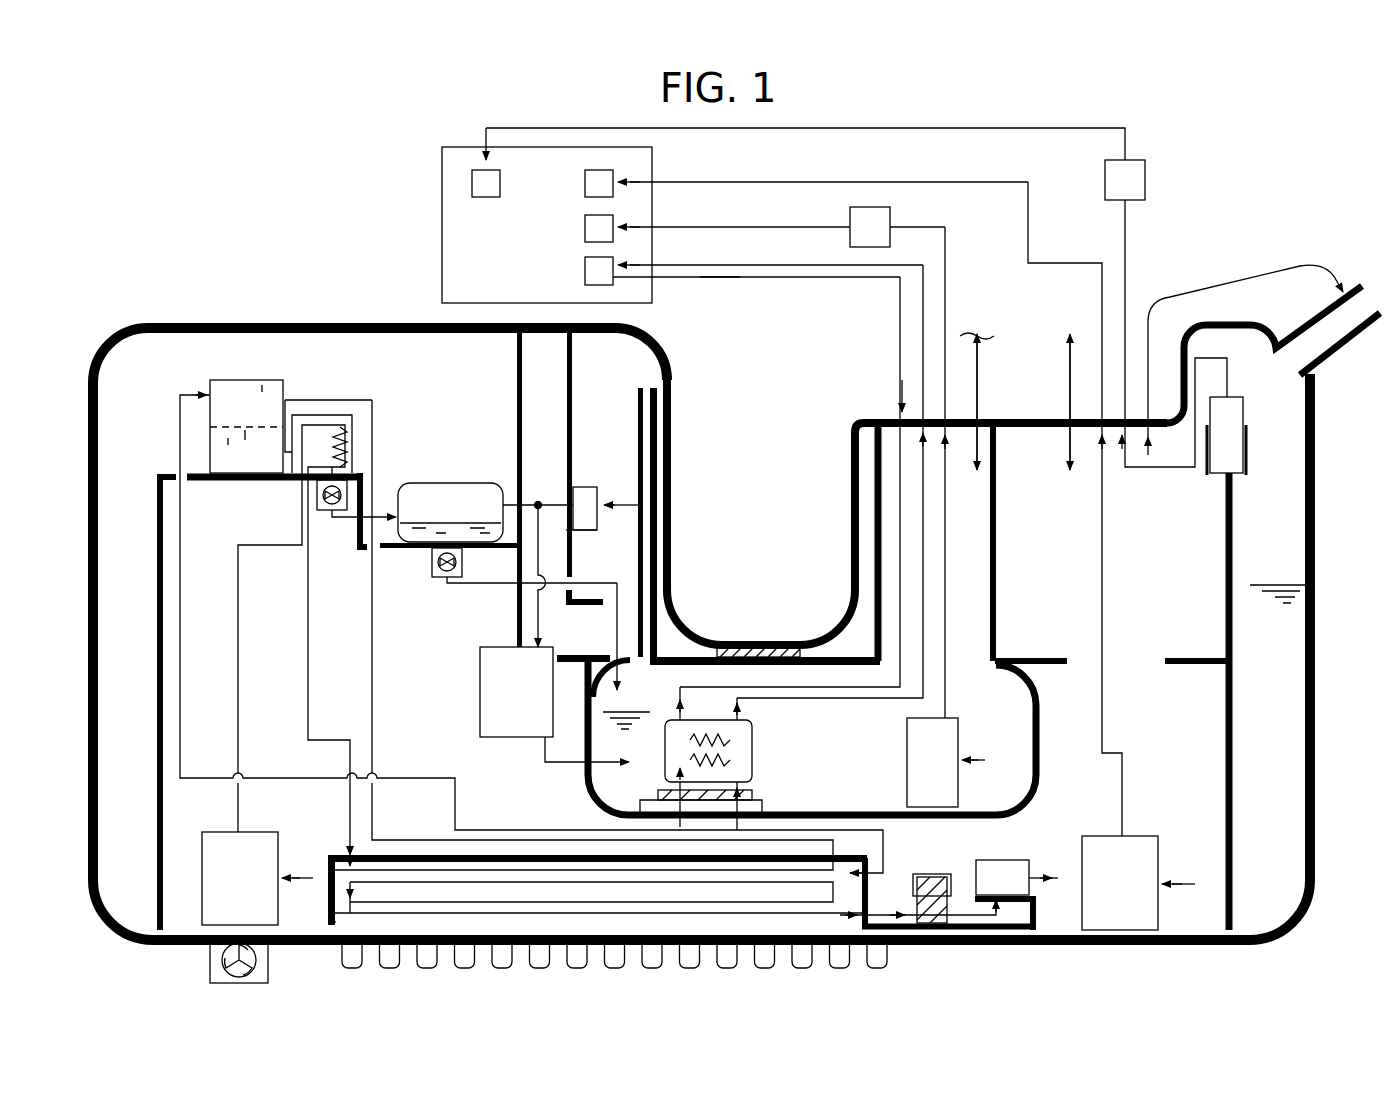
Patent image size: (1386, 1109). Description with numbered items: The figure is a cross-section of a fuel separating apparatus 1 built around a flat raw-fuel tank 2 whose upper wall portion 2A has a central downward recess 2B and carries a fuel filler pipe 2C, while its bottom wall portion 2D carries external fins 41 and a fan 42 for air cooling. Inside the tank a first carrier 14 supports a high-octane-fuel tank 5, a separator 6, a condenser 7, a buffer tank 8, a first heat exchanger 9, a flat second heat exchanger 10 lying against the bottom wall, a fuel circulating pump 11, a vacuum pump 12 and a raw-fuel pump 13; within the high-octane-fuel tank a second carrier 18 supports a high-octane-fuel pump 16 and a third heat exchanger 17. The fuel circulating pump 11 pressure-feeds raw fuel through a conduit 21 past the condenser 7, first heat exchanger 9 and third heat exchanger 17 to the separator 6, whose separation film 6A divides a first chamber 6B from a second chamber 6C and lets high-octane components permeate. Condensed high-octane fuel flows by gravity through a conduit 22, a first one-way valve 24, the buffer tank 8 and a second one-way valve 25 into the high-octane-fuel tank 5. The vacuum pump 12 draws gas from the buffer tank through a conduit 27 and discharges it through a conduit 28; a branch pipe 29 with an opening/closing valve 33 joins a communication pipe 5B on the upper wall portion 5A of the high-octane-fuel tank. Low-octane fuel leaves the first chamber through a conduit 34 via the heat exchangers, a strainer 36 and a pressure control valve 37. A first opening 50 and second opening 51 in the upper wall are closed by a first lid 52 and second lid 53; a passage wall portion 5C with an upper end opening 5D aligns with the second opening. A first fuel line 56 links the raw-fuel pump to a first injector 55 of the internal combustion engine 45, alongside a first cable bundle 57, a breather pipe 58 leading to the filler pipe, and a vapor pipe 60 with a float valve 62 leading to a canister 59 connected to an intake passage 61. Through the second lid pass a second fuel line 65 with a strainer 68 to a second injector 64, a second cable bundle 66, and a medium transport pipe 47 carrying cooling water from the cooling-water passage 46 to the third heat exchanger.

The fuel separating apparatus 1 is at (146, 290).
The raw-fuel tank 2 is at (1319, 562).
The upper wall portion 2A is at (880, 417).
The recess 2B is at (738, 642).
The fuel filler pipe 2C is at (1325, 352).
The bottom wall portion 2D is at (1032, 934).
The high-octane-fuel tank 5 is at (1040, 797).
The upper wall portion 5A is at (830, 652).
The communication pipe 5B is at (660, 445).
The passage wall portion 5C is at (873, 560).
The upper end opening 5D is at (851, 464).
The separator 6 is at (287, 378).
The separation film 6A is at (245, 437).
The first chamber 6B is at (262, 390).
The second chamber 6C is at (228, 440).
The condenser 7 is at (355, 418).
The buffer tank 8 is at (437, 486).
The first heat exchanger 9 is at (330, 862).
The second heat exchanger 10 is at (338, 928).
The fuel circulating pump 11 is at (222, 830).
The vacuum pump 12 is at (478, 672).
The raw-fuel pump 13 is at (1160, 850).
The first carrier 14 is at (156, 710).
The high-octane-fuel pump 16 is at (905, 765).
The third heat exchanger 17 is at (752, 743).
The second carrier 18 is at (786, 810).
The conduit 21 is at (176, 418).
The conduit 22 is at (336, 522).
The first one-way valve 24 is at (348, 490).
The second one-way valve 25 is at (431, 565).
The conduit 27 is at (543, 620).
The conduit 28 is at (552, 768).
The branch pipe 29 is at (543, 498).
The opening/closing valve 33 is at (590, 486).
The conduit 34 is at (374, 720).
The strainer 36 is at (934, 875).
The pressure control valve 37 is at (993, 860).
The fins 41 is at (890, 955).
The fan 42 is at (208, 965).
The internal combustion engine 45 is at (440, 244).
The cooling-water passage 46 is at (583, 272).
The medium transport pipe 47 is at (718, 280).
The first opening 50 is at (1064, 446).
The second opening 51 is at (975, 412).
The first lid 52 is at (1073, 415).
The second lid 53 is at (972, 412).
The first injector 55 is at (583, 184).
The first fuel line 56 is at (1105, 592).
The first cable bundle 57 is at (1066, 400).
The breather pipe 58 is at (1236, 288).
The canister 59 is at (1148, 186).
The vapor pipe 60 is at (1130, 242).
The intake passage 61 is at (470, 185).
The float valve 62 is at (1246, 415).
The second injector 64 is at (583, 230).
The second fuel line 65 is at (988, 592).
The second cable bundle 66 is at (985, 350).
The strainer 68 is at (892, 210).